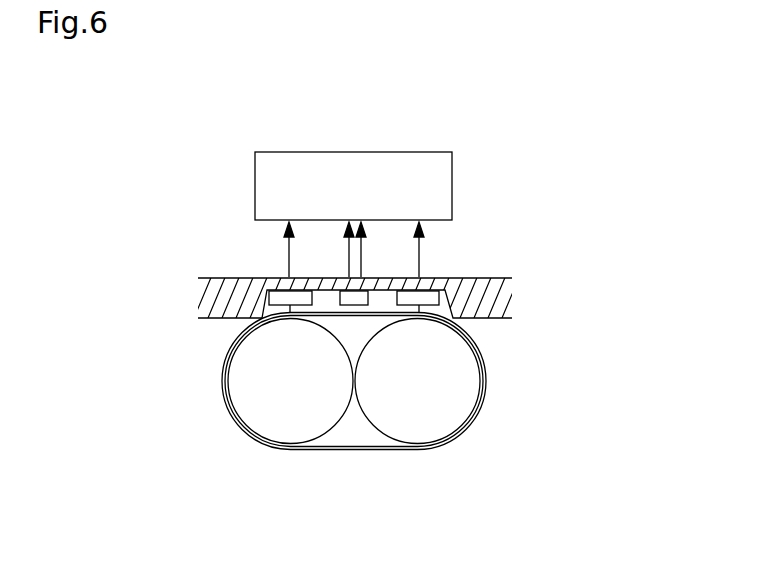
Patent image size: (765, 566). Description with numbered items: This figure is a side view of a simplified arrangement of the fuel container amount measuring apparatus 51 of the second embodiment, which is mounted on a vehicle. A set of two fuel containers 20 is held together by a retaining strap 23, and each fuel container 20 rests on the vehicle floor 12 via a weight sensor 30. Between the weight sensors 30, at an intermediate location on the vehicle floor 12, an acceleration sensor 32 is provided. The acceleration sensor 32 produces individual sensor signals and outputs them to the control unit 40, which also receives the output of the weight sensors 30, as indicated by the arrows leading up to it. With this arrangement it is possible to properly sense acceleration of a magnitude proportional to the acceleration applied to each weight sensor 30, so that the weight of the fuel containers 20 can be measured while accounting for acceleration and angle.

The vehicle floor 12 is at (240, 276).
The fuel container 20 is at (354, 381).
The retaining strap 23 is at (268, 446).
The weight sensor 30 is at (290, 301).
The acceleration sensor 32 is at (357, 296).
The control unit 40 is at (353, 186).
The amount measuring apparatus 51 is at (491, 146).